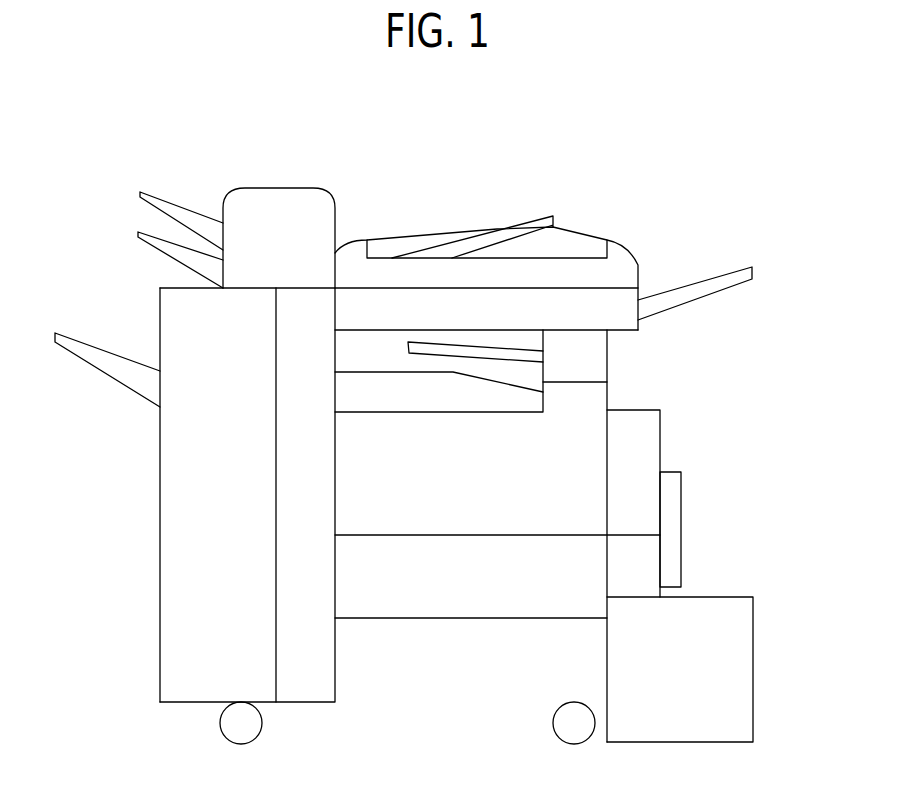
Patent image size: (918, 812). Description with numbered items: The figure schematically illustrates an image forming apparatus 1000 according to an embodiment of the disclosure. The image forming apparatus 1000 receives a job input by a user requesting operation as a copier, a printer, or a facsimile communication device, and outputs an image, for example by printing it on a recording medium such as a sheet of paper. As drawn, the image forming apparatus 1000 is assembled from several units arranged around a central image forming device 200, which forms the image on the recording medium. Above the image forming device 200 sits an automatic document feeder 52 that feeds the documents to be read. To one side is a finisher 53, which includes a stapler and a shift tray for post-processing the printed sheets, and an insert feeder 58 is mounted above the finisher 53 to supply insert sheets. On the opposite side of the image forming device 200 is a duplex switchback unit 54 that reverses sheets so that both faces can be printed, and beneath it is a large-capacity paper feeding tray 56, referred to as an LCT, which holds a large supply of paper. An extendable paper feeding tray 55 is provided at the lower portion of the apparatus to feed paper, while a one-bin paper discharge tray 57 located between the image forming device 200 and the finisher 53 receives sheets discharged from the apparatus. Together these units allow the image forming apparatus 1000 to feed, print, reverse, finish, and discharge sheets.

The image forming apparatus 1000 is at (605, 168).
The insert feeder 58 is at (335, 218).
The finisher 53 is at (160, 493).
The automatic document feeder 52 is at (640, 263).
The image forming device 200 is at (608, 395).
The one-bin paper discharge tray 57 is at (608, 355).
The duplex switchback unit 54 is at (660, 447).
The large-capacity paper feeding tray 56 is at (753, 672).
The extendable paper feeding tray 55 is at (470, 703).